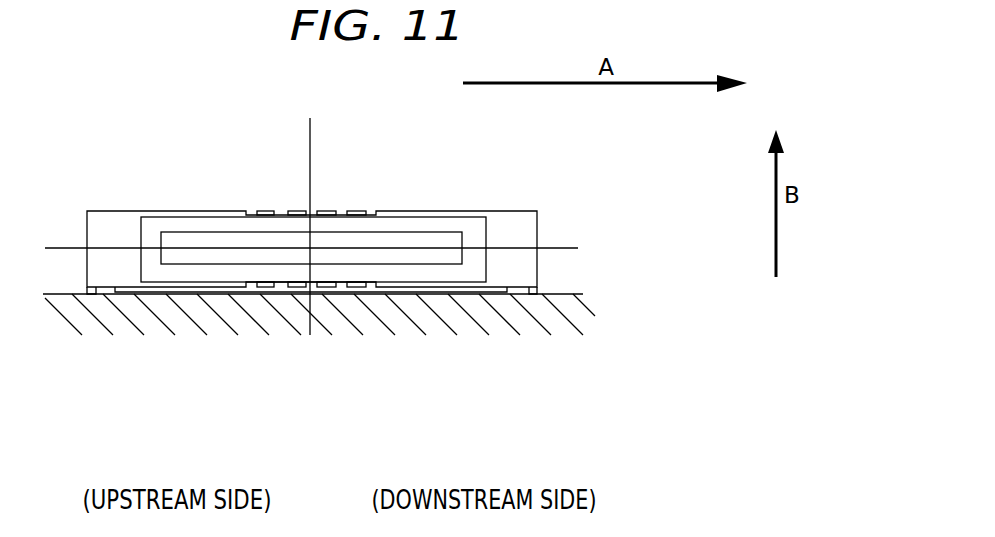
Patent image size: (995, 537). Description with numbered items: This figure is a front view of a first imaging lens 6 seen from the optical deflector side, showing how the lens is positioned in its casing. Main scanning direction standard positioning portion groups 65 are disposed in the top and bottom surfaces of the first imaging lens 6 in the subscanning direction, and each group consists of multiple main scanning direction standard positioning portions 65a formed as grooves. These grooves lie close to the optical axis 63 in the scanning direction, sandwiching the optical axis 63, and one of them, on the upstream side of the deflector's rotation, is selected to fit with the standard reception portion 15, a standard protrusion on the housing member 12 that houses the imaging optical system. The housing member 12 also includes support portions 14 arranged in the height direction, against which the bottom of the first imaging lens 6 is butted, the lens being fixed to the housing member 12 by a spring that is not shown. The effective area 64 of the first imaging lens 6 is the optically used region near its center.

The first imaging lens 6 is at (118, 218).
The housing member 12 is at (422, 317).
The support portions 14 is at (105, 292).
The standard reception portion 15 is at (247, 293).
The optical axis 63 is at (312, 240).
The effective area 64 is at (192, 245).
The main scanning direction standard positioning portion groups 65 is at (350, 273).
The main scanning direction standard positioning portions 65a is at (282, 208).